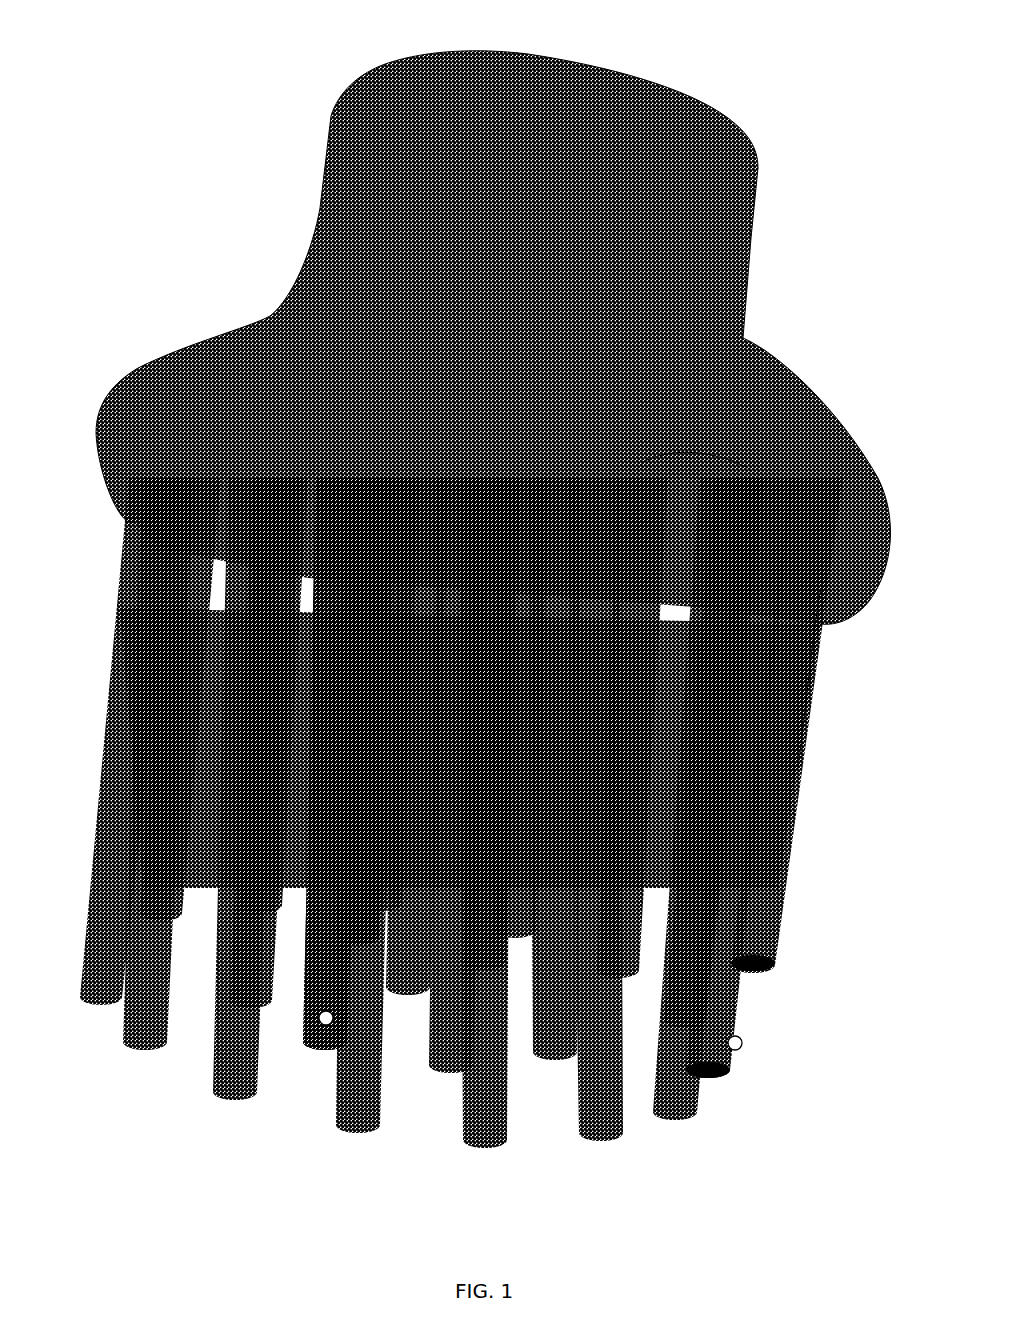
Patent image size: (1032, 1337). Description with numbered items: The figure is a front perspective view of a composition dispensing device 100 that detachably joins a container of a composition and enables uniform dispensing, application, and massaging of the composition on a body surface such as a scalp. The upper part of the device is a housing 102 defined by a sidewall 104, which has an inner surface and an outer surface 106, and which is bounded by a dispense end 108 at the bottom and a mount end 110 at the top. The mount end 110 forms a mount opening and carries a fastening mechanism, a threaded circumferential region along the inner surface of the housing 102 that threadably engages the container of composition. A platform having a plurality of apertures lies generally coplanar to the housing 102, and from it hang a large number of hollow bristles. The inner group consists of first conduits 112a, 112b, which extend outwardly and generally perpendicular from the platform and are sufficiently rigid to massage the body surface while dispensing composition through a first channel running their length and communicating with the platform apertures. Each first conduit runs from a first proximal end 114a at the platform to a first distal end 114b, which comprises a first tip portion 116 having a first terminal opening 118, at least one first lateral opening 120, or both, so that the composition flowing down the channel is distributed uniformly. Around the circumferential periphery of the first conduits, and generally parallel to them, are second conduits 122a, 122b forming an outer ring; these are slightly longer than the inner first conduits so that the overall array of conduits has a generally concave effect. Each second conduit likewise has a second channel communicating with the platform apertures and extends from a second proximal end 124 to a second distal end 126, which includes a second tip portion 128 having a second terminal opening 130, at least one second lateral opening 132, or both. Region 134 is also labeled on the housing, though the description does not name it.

The composition dispensing device 100 is at (105, 76).
The housing 102 is at (760, 302).
The sidewall 104 is at (303, 250).
The outer surface 106 is at (541, 254).
The dispense end 108 is at (862, 530).
The mount end 110 is at (745, 135).
The first conduit 112a is at (323, 823).
The first conduit 112b is at (603, 717).
The first proximal end 114a is at (365, 565).
The first distal end 114b is at (315, 862).
The first tip portion 116 is at (350, 1005).
The first terminal opening 118 is at (318, 1053).
The first lateral opening 120 is at (337, 990).
The second conduit 122a is at (792, 760).
The second conduit 122b is at (95, 727).
The second proximal end 124 is at (813, 580).
The second distal end 126 is at (767, 940).
The second tip portion 128 is at (750, 1005).
The second terminal opening 130 is at (707, 1073).
The second lateral opening 132 is at (733, 1043).
The flange shoulder 134 is at (633, 455).